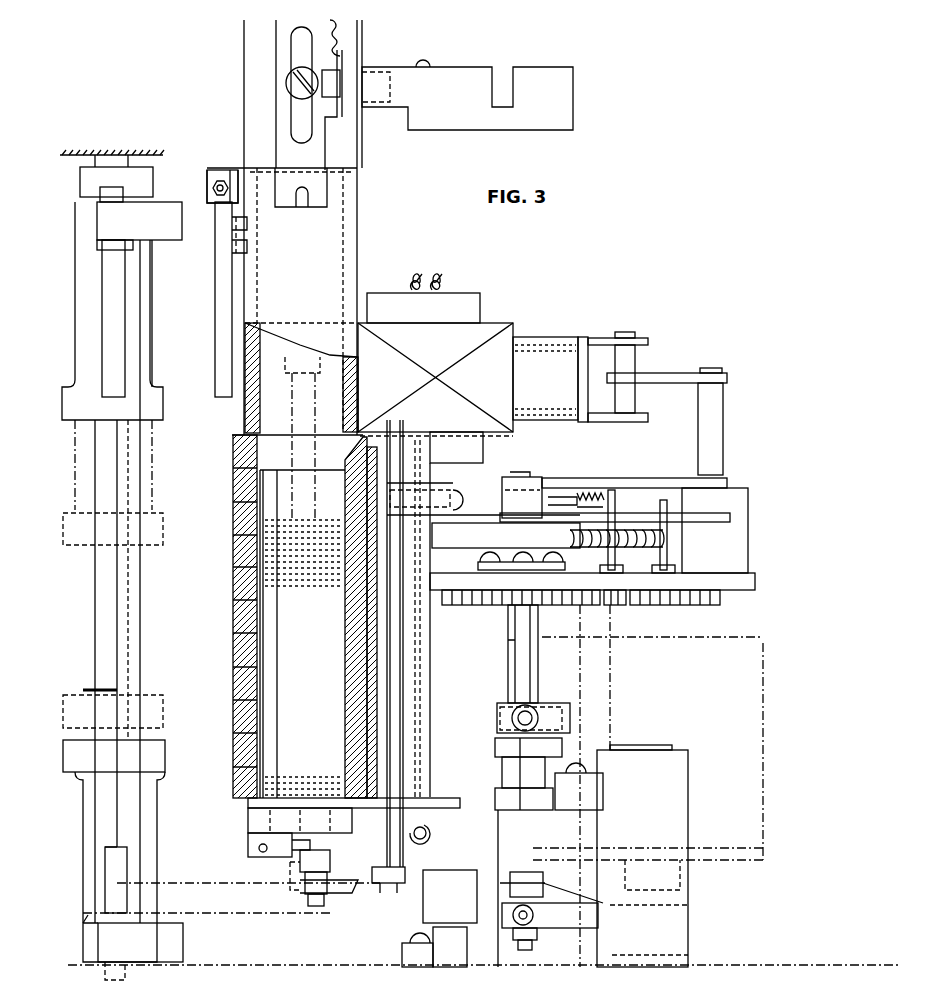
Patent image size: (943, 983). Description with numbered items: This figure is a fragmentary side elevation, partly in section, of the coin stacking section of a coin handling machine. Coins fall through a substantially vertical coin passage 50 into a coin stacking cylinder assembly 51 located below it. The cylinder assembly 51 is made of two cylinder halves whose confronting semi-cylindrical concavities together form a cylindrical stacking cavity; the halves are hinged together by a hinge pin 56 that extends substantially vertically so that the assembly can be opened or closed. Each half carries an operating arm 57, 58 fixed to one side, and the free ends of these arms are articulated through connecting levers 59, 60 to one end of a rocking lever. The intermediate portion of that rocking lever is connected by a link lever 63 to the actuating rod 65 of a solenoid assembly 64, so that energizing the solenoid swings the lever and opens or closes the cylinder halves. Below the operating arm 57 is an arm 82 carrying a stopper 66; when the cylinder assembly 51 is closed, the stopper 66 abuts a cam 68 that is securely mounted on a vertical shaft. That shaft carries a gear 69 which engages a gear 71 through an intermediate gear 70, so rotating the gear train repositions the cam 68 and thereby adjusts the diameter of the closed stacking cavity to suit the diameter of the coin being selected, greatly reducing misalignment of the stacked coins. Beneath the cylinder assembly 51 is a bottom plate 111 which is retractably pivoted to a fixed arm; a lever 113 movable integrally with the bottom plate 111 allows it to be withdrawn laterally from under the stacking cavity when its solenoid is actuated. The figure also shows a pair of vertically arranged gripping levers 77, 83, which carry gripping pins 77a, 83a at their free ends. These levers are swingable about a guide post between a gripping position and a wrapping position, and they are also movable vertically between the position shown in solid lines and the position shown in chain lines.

The coin passage 50 is at (245, 88).
The coin stacking cylinder assembly 51 is at (226, 461).
The hinge pin 56 is at (382, 880).
The operating arm 57 is at (493, 520).
The operating arm 58 is at (473, 487).
The connecting lever 59 is at (682, 518).
The connecting lever 60 is at (615, 478).
The link lever 63 is at (675, 373).
The solenoid assembly 64 is at (478, 293).
The actuating rod 65 is at (580, 340).
The stopper 66 is at (540, 715).
The cam 68 is at (565, 716).
The gear 69 is at (460, 605).
The intermediate gear 70 is at (615, 605).
The gear 71 is at (678, 605).
The gripping lever 77 is at (172, 238).
The gripping pin 77a is at (120, 303).
The arm 82 is at (478, 703).
The gripping lever 83 is at (185, 883).
The gripping pin 83a is at (105, 855).
The bottom plate 111 is at (318, 775).
The lever 113 is at (330, 895).